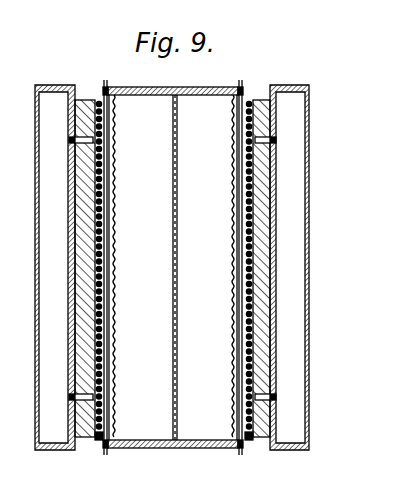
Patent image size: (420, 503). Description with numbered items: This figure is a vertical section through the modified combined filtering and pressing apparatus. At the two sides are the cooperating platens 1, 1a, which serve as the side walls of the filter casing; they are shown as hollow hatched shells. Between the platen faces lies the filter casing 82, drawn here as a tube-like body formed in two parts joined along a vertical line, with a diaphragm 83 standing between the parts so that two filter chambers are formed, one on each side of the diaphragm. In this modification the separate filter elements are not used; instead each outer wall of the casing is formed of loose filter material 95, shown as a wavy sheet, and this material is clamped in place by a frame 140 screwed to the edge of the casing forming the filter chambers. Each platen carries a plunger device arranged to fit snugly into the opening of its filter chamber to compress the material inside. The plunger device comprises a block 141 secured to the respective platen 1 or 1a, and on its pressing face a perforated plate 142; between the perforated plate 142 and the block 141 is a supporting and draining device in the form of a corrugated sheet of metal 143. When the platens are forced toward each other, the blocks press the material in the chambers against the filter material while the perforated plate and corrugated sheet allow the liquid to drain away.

The platen 1 is at (55, 267).
The platen 1a is at (300, 239).
The filter casing 82 is at (173, 267).
The diaphragm 83 is at (178, 248).
The bag of filter cloth 95 is at (115, 331).
The frame 140 is at (106, 87).
The block 141 is at (82, 270).
The perforated plate 142 is at (103, 350).
The corrugated sheet of metal 143 is at (97, 440).